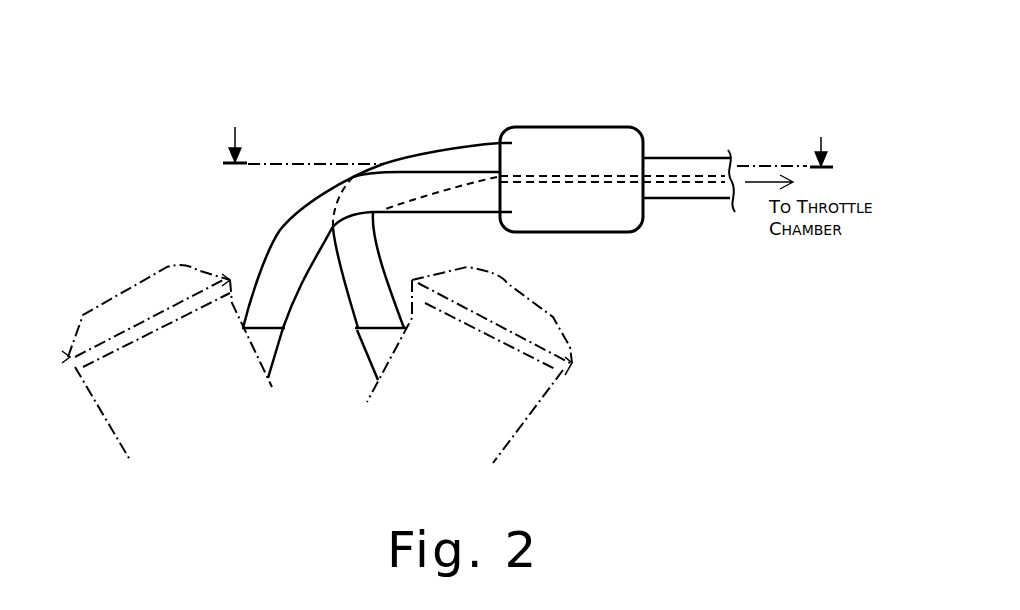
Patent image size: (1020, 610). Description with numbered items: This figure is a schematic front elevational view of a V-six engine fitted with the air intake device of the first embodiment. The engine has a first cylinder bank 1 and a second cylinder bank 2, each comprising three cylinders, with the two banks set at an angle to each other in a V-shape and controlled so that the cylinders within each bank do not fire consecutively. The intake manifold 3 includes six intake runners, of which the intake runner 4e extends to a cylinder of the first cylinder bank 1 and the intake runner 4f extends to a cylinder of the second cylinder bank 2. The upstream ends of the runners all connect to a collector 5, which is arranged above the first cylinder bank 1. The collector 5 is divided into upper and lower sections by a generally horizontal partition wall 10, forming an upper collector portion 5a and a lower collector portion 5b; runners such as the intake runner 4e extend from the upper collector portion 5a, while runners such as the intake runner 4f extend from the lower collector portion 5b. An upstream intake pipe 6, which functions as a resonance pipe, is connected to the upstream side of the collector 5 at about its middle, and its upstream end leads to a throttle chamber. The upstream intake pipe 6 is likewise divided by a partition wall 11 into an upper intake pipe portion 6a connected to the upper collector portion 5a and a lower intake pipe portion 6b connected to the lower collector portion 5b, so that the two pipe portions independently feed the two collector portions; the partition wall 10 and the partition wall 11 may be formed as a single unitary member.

The first cylinder bank 1 is at (520, 413).
The second cylinder bank 2 is at (117, 432).
The intake manifold 3 is at (542, 40).
The intake runner 4e is at (430, 150).
The intake runner 4f is at (318, 190).
The collector 5 is at (577, 125).
The upper collector portion 5a is at (541, 156).
The lower collector portion 5b is at (542, 210).
The upstream intake pipe 6 is at (670, 157).
The upper intake pipe portion 6a is at (708, 167).
The lower intake pipe portion 6b is at (712, 190).
The partition wall 10 is at (600, 178).
The partition wall 11 is at (668, 184).